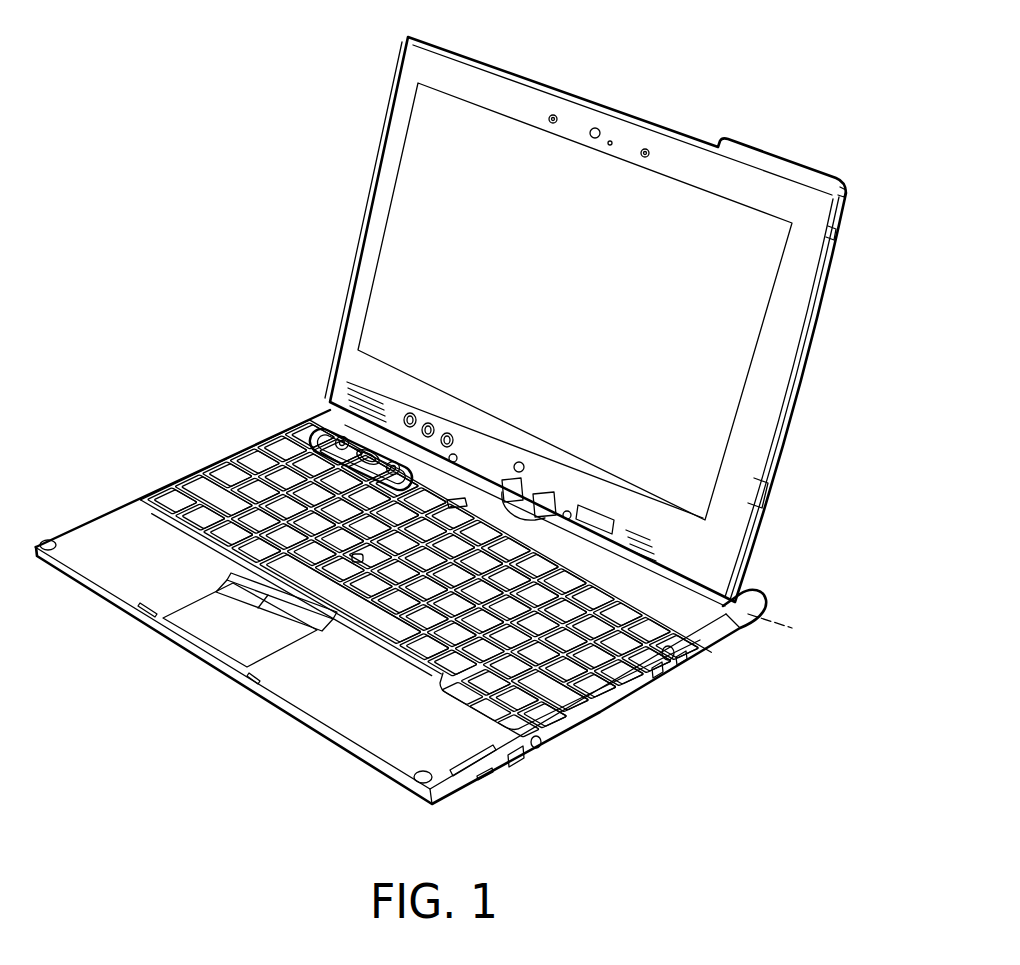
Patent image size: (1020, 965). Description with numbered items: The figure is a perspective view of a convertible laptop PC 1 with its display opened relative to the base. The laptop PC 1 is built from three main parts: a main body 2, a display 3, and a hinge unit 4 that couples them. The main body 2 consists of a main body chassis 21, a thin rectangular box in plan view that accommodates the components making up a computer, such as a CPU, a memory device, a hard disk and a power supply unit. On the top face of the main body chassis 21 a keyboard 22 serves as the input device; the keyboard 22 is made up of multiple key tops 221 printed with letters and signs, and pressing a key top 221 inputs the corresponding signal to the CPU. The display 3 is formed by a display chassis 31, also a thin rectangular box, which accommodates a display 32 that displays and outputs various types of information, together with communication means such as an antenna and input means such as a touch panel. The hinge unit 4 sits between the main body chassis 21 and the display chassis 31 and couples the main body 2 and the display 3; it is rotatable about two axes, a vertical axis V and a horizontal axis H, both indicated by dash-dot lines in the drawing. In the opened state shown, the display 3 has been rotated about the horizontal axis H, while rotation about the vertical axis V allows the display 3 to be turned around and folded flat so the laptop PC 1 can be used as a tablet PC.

The laptop PC 1 is at (676, 76).
The main body 2 is at (378, 728).
The main body chassis 21 is at (282, 692).
The keyboard 22 is at (235, 372).
The key tops 221 is at (640, 545).
The display 3 is at (822, 290).
The display chassis 31 is at (846, 190).
The display 32 is at (752, 330).
The hinge unit 4 is at (548, 485).